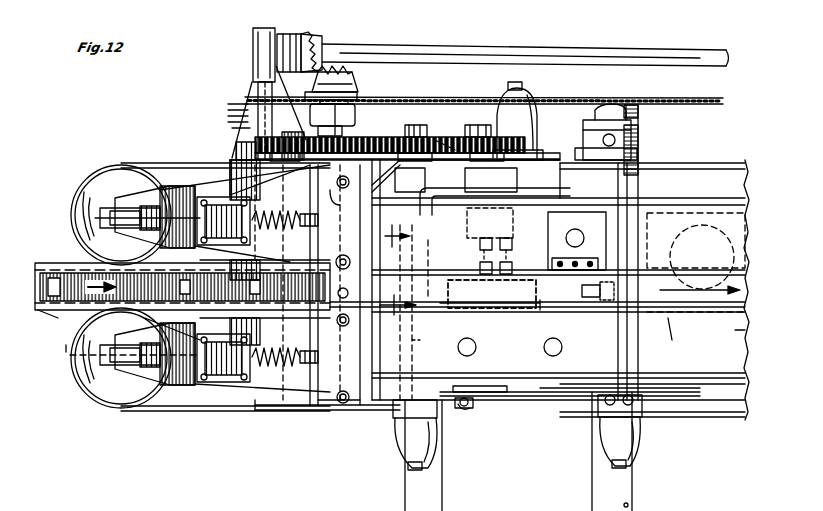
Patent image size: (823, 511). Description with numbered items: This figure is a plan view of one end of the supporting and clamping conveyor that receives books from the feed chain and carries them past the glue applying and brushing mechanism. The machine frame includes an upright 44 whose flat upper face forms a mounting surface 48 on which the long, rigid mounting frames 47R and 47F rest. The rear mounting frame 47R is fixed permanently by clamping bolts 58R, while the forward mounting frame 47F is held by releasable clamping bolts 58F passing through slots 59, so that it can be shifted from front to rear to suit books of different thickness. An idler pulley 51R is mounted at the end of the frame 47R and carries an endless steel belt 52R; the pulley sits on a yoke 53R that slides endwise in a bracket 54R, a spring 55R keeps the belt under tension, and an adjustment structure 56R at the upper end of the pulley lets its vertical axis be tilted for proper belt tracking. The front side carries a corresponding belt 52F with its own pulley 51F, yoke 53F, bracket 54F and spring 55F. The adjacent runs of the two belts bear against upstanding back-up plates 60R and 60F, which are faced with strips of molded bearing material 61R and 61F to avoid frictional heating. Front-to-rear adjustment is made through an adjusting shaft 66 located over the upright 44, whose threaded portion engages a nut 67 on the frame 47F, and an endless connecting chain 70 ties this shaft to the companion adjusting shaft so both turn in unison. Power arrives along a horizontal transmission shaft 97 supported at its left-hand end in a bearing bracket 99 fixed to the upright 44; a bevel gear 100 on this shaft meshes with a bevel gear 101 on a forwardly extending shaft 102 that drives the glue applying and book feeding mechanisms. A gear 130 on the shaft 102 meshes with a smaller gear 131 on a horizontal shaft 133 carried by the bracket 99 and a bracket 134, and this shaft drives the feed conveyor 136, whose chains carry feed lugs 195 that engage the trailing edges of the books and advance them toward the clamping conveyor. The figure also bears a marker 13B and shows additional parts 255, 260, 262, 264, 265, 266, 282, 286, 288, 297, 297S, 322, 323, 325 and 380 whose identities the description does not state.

The section line 13B is at (409, 265).
The upright 44 is at (325, 412).
The rear mounting frame 47R is at (683, 205).
The forward mounting frame 47F is at (688, 362).
The mounting surface 48 is at (344, 282).
The idler pulley 51R is at (86, 178).
The front chain wheel 51F is at (106, 392).
The endless steel belt 52R is at (158, 162).
The endless steel belt 52F is at (166, 410).
The yoke 53R is at (170, 192).
The front cone hub 53F is at (155, 354).
The bracket 54R is at (245, 185).
The front spring 54F is at (285, 357).
The spring 55R is at (256, 240).
The front bearing block 55F is at (223, 358).
The adjustment structure 56R is at (100, 250).
The clamping bolts 58R is at (338, 192).
The releasable clamping bolts 58F is at (346, 428).
The slots 59 is at (343, 300).
The back-up plate 60R is at (680, 266).
The back-up plate 60F is at (674, 312).
The strip of molded bearing material 61R is at (748, 225).
The strip of molded bearing material 61F is at (728, 318).
The adjusting shaft 66 is at (318, 150).
The nut 67 is at (310, 410).
The endless connecting chain 70 is at (595, 97).
The horizontal transmission shaft 97 is at (512, 52).
The bearing bracket 99 is at (252, 68).
The bevel gear 100 is at (312, 38).
The bevel gear 101 is at (345, 78).
The forwardly extending shaft 102 is at (345, 126).
The gear 130 is at (388, 138).
The gear 131 is at (262, 135).
The horizontal shaft 133 is at (255, 150).
The bracket 134 is at (270, 326).
The feed conveyor 136 is at (53, 312).
The feed lugs 195 is at (60, 268).
The cam follower 255 is at (522, 112).
The slide 260 is at (545, 303).
The pipe 262 is at (515, 185).
The rack block 264 is at (468, 137).
The bar 265 is at (436, 312).
The hole 266 is at (420, 340).
The cross member 282 is at (633, 200).
The bracket 286 is at (633, 128).
The switch 288 is at (588, 258).
The post 297 is at (432, 493).
The post pivot 297S is at (628, 505).
The bar 322 is at (497, 398).
The roller 323 is at (474, 410).
The rod 325 is at (565, 398).
The rack tooth 380 is at (440, 140).